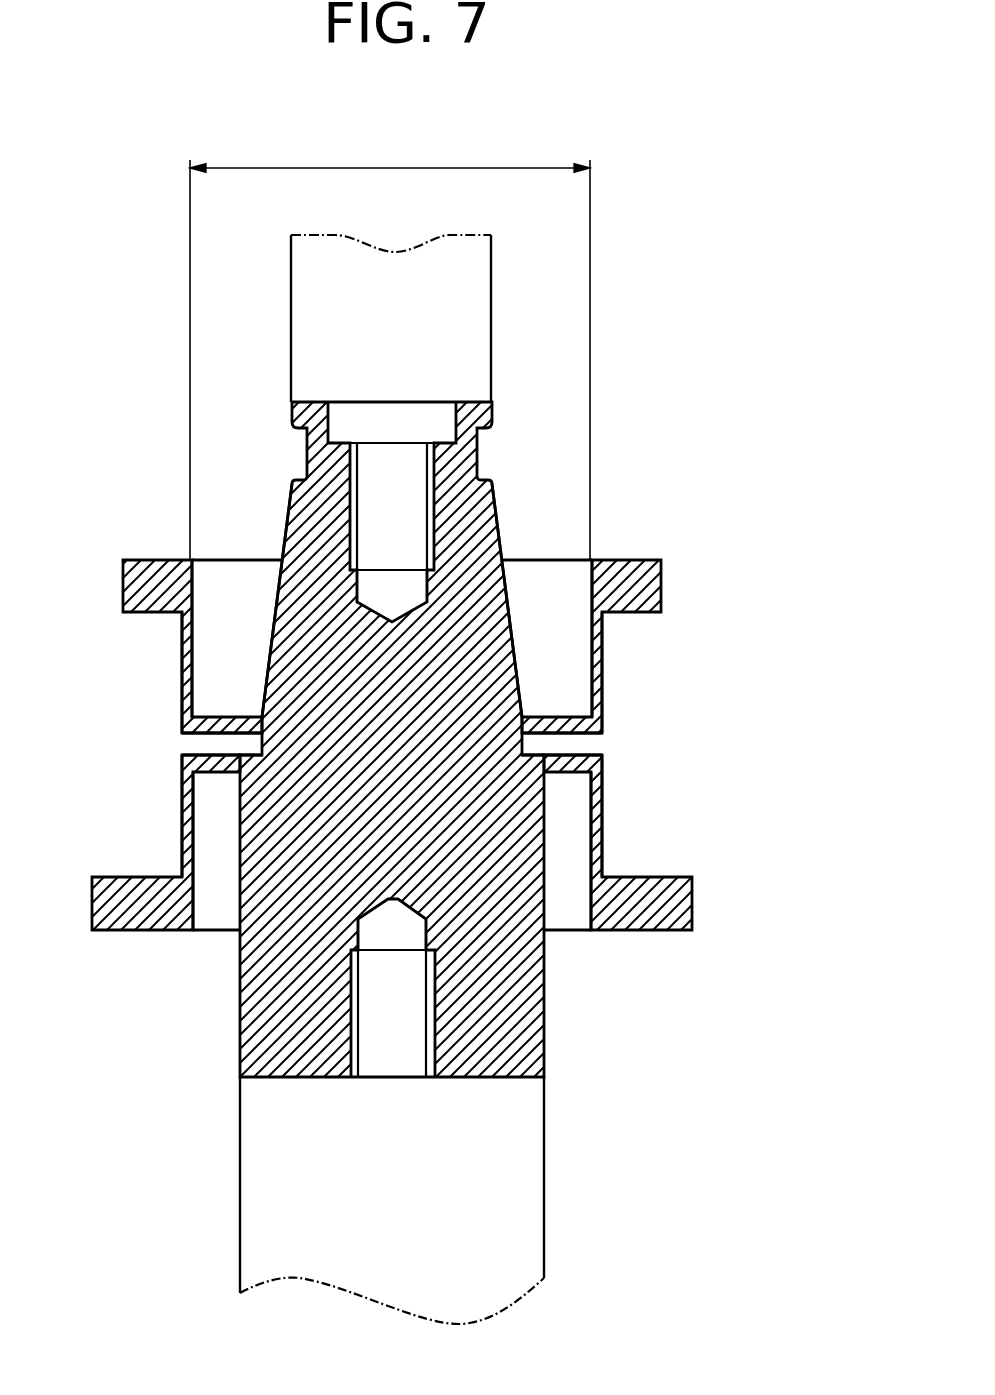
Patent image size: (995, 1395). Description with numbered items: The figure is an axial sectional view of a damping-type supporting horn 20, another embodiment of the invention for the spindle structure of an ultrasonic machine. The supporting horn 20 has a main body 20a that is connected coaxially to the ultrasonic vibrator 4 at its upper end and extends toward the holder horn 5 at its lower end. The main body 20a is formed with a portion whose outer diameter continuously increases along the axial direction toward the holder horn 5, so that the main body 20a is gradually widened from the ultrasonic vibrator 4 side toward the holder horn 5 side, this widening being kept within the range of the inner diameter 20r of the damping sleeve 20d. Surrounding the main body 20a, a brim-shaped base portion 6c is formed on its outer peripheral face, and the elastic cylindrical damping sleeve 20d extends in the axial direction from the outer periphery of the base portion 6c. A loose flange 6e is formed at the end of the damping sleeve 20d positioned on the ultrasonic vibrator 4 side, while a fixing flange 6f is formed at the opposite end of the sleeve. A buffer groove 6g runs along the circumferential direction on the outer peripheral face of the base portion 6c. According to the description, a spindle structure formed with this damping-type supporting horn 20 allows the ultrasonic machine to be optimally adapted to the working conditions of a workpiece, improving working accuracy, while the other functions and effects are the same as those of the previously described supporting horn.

The ultrasonic vibrator 4 is at (460, 288).
The holder horn 5 is at (516, 1166).
The supporting horn 20 is at (279, 392).
The main body 20a is at (499, 526).
The inner diameter 20r is at (472, 168).
The damping sleeve 20d is at (180, 668).
The base portion 6c is at (233, 717).
The loose flange 6e is at (663, 566).
The fixing flange 6f is at (667, 898).
The buffer groove 6g is at (213, 746).